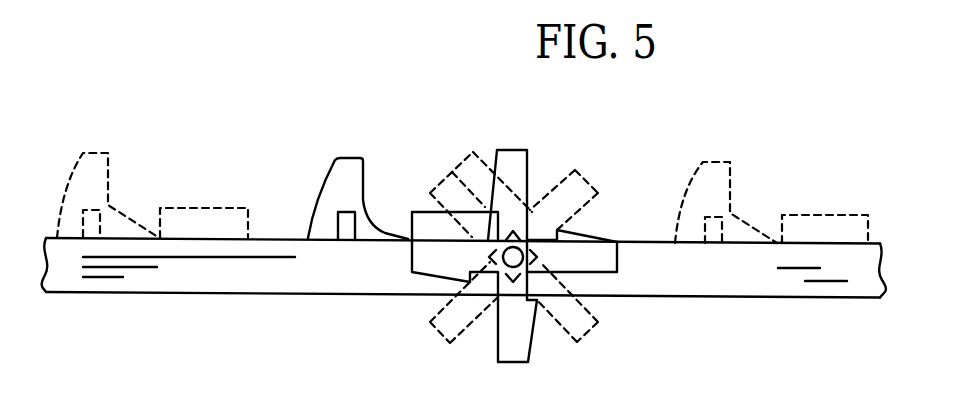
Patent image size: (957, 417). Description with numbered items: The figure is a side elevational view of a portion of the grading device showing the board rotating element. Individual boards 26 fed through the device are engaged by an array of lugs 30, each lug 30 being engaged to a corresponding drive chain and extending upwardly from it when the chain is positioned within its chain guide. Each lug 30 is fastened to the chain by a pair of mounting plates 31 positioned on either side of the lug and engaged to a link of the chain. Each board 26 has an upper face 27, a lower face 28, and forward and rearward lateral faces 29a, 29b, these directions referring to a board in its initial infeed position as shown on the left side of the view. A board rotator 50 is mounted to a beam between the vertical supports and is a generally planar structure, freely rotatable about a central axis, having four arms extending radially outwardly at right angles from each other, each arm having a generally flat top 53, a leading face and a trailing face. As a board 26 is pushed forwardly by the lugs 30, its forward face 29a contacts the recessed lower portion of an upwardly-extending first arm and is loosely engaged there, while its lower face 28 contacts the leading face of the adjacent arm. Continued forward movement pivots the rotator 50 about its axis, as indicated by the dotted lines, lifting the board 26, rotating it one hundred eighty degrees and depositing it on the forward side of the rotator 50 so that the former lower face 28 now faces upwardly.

The board 26 is at (213, 238).
The upper face 27 is at (203, 208).
The lower face 28 is at (828, 215).
The forward lateral face 29a is at (248, 224).
The rearward lateral face 29b is at (160, 238).
The lug 30 is at (698, 190).
The mounting plate 31 is at (348, 230).
The board rotator 50 is at (514, 348).
The flat top 53 is at (238, 416).